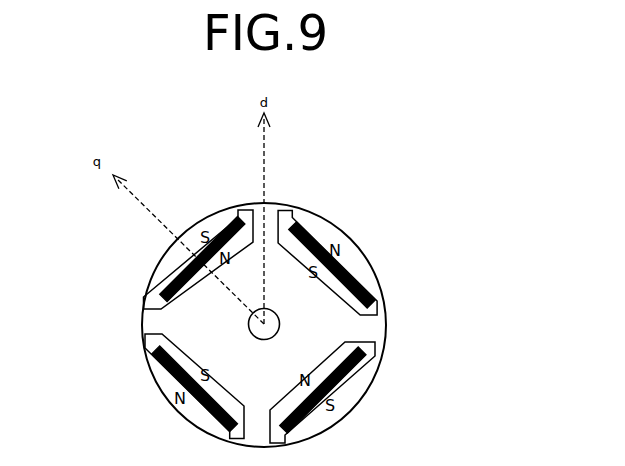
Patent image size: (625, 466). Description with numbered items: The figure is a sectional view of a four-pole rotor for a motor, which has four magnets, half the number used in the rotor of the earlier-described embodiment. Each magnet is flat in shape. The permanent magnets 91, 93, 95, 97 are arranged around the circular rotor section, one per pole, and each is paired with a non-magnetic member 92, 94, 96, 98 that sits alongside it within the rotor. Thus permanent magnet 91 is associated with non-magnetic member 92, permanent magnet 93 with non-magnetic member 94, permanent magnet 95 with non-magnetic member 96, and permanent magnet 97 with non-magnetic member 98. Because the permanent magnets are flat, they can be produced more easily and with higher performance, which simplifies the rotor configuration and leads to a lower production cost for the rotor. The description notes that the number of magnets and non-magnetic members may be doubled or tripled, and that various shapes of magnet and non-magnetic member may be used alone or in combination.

The permanent magnet 91 is at (352, 278).
The non-magnetic member 92 is at (378, 321).
The permanent magnet 93 is at (174, 278).
The non-magnetic member 94 is at (153, 316).
The permanent magnet 95 is at (165, 368).
The non-magnetic member 96 is at (156, 333).
The permanent magnet 97 is at (357, 371).
The non-magnetic member 98 is at (376, 342).